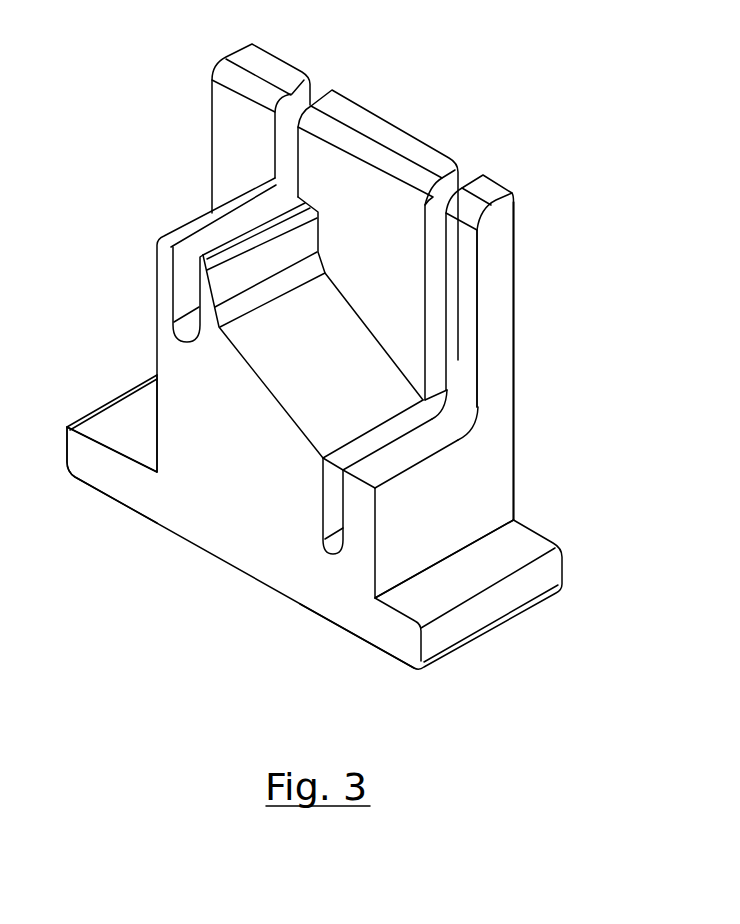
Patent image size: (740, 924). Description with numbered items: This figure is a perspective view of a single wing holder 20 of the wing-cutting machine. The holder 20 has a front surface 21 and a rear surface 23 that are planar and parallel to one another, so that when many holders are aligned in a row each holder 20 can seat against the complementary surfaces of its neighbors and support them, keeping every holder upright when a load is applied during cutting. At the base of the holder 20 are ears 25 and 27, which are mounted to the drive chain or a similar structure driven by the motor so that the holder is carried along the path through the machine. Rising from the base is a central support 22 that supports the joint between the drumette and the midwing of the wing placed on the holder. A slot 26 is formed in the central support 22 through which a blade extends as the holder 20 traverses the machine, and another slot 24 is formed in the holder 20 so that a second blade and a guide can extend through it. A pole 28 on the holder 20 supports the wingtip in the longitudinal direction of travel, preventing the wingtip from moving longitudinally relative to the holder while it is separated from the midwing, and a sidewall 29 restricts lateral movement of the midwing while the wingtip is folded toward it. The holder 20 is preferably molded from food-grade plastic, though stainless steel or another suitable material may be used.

The wing holder 20 is at (433, 97).
The front surface 21 is at (225, 528).
The central support 22 is at (186, 216).
The rear surface 23 is at (527, 487).
The slot 24 is at (471, 178).
The ear 25 is at (392, 633).
The slot 26 is at (318, 92).
The ear 27 is at (100, 469).
The pole 28 is at (500, 277).
The sidewall 29 is at (353, 378).